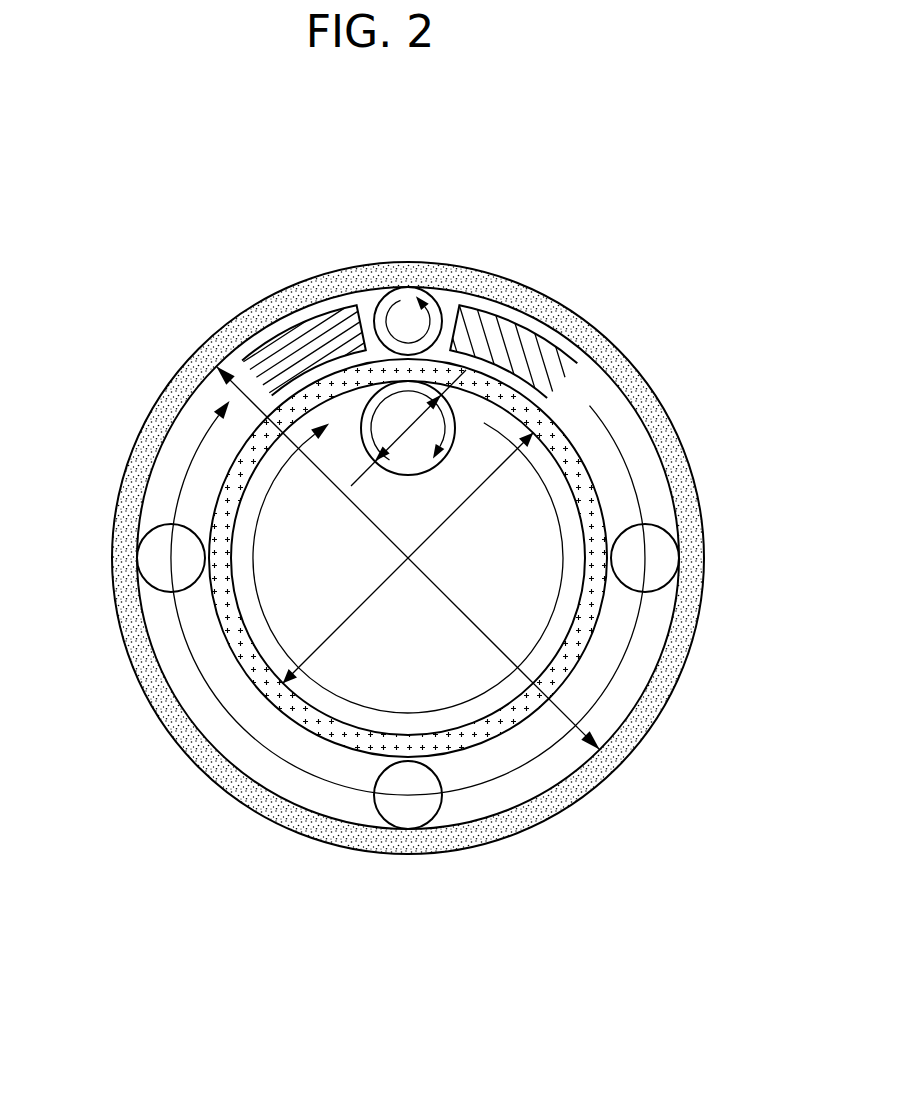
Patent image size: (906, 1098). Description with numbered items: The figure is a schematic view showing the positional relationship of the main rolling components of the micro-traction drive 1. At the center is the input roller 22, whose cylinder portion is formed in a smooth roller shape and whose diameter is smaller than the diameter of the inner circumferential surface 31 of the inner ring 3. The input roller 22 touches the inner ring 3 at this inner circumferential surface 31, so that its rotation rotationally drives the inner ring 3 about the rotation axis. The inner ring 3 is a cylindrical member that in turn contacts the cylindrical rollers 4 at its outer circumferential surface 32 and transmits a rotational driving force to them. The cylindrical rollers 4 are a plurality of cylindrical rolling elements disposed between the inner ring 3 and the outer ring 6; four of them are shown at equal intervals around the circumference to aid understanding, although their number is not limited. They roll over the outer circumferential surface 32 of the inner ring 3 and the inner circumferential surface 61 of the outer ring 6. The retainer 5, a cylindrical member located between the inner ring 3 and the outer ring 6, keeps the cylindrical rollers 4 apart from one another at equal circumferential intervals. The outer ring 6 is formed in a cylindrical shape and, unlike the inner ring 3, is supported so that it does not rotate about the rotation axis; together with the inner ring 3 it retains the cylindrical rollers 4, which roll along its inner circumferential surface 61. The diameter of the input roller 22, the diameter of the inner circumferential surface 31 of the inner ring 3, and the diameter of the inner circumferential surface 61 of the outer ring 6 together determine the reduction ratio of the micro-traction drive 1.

The micro-traction drive 1 is at (85, 150).
The inner ring 3 is at (338, 737).
The inner circumferential surface 31 is at (472, 725).
The outer circumferential surface 32 is at (522, 732).
The cylindrical rollers 4 is at (410, 302).
The retainer 5 is at (290, 340).
The outer ring 6 is at (632, 368).
The inner circumferential surface 61 is at (647, 436).
The input roller 22 is at (410, 461).